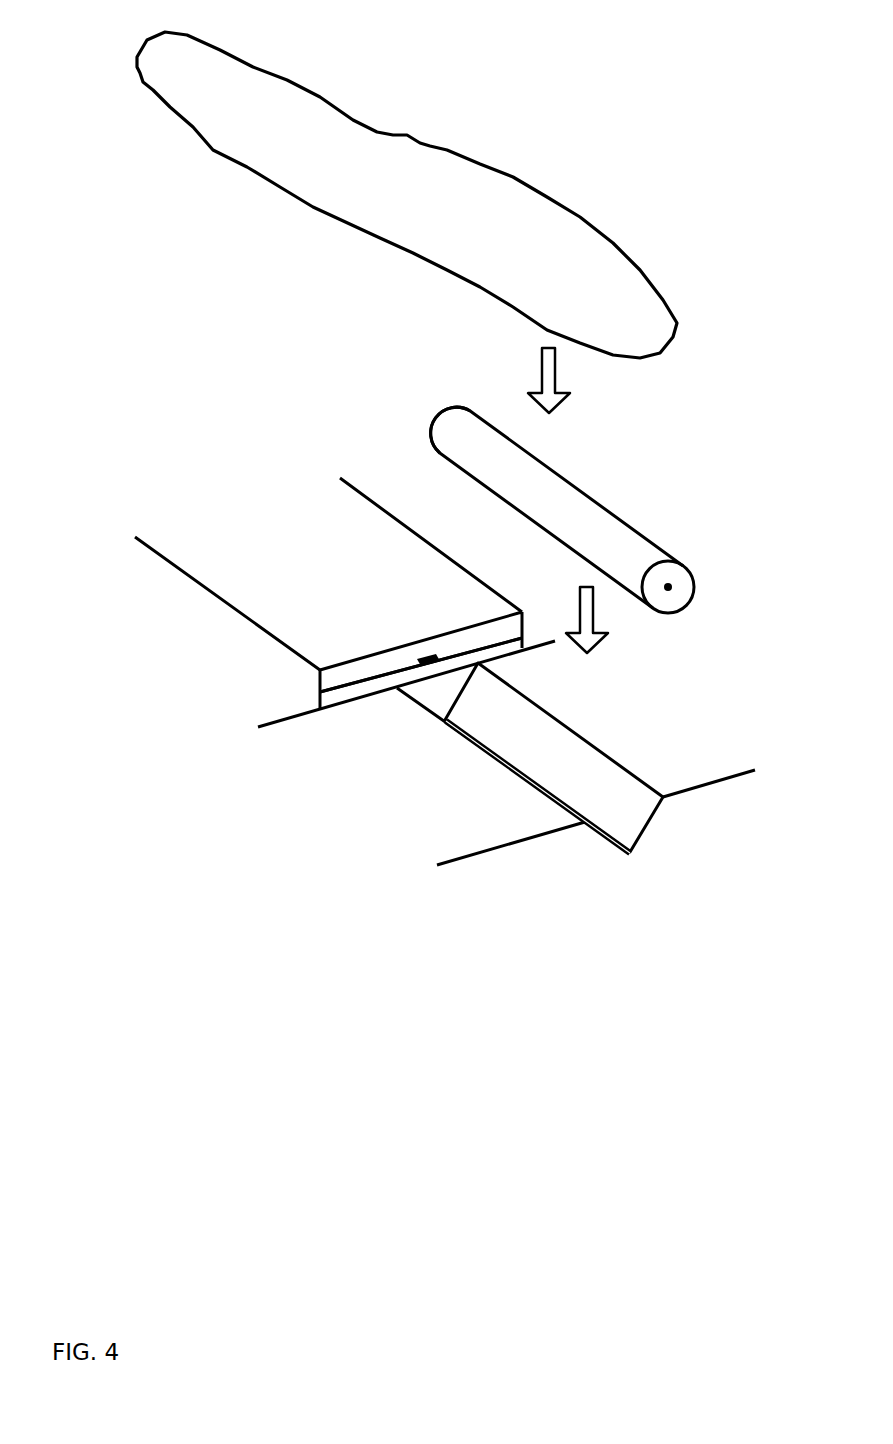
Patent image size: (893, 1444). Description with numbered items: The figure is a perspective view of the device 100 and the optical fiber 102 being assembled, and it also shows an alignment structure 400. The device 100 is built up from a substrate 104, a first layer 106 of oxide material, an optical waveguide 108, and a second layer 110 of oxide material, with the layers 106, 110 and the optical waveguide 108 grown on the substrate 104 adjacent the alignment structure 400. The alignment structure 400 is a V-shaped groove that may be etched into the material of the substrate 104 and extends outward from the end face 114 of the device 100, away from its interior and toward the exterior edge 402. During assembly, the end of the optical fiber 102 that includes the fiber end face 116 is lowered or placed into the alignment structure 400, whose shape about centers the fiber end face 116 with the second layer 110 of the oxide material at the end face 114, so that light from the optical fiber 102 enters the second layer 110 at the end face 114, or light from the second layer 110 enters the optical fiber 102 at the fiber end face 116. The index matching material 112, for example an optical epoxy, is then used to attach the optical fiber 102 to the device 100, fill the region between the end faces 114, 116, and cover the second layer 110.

The device 100 is at (164, 522).
The optical fiber 102 is at (598, 500).
The substrate 104 is at (428, 697).
The first layer of oxide material 106 is at (348, 695).
The optical waveguide 108 is at (428, 656).
The second layer of oxide material 110 is at (370, 663).
The index matching material 112 is at (160, 72).
The end face 114 is at (438, 670).
The fiber end face 116 is at (444, 413).
The alignment structure 400 is at (567, 727).
The exterior edge 402 is at (702, 790).